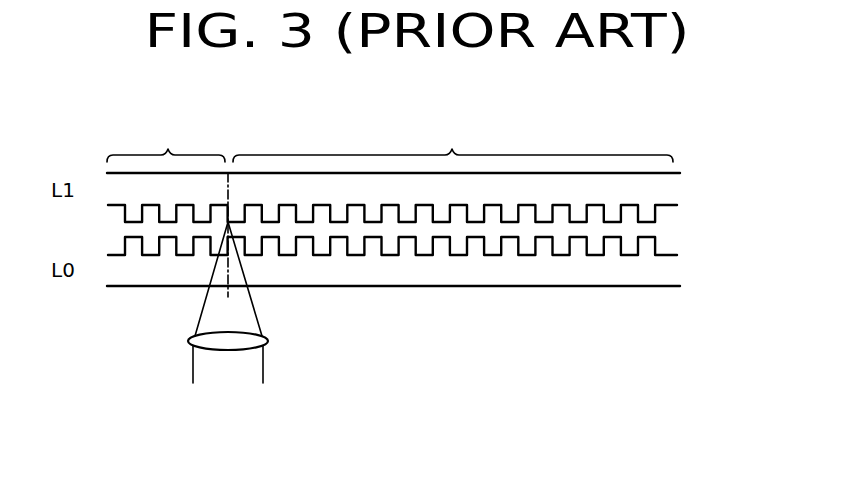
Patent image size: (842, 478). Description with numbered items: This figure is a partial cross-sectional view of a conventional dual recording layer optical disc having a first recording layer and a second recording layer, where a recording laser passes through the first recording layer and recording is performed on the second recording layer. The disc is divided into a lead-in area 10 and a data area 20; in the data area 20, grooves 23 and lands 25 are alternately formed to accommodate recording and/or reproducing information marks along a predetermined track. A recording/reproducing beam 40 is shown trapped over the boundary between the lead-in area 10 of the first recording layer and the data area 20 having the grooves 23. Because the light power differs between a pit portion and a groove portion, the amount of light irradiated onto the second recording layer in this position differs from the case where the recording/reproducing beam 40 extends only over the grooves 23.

The lead-in area 10 is at (166, 142).
The data area 20 is at (453, 142).
The grooves 23 is at (443, 222).
The lands 25 is at (458, 205).
The recording/reproducing beam 40 is at (198, 308).